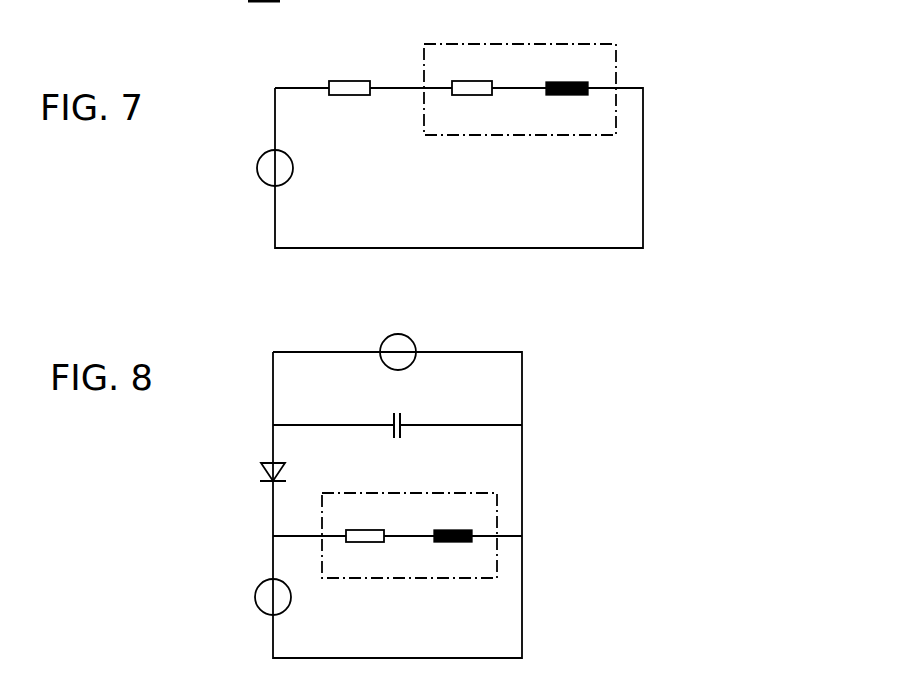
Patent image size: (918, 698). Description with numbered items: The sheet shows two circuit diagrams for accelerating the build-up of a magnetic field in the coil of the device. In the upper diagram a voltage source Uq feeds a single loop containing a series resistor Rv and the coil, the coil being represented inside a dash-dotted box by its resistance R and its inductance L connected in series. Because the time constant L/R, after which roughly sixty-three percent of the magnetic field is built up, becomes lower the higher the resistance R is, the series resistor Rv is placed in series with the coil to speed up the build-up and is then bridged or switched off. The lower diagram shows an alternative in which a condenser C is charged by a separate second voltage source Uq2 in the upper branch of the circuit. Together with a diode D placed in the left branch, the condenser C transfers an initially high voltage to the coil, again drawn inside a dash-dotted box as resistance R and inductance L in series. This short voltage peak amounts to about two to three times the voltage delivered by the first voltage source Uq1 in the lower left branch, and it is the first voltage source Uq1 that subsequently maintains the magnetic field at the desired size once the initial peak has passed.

In FIG. 7, the series resistor Rv is at (349, 77).
In FIG. 7, the resistance R is at (472, 77).
In FIG. 8, the resistance R is at (365, 525).
In FIG. 7, the inductance L is at (567, 77).
In FIG. 8, the inductance L is at (453, 525).
In FIG. 7, the element coil is at (520, 72).
In FIG. 8, the element coil is at (409, 519).
In FIG. 7, the voltage source Uq is at (246, 158).
In FIG. 8, the first voltage source Uq1 is at (238, 587).
In FIG. 8, the second voltage source Uq2 is at (416, 316).
In FIG. 8, the condenser C is at (398, 410).
In FIG. 8, the diode D is at (260, 472).